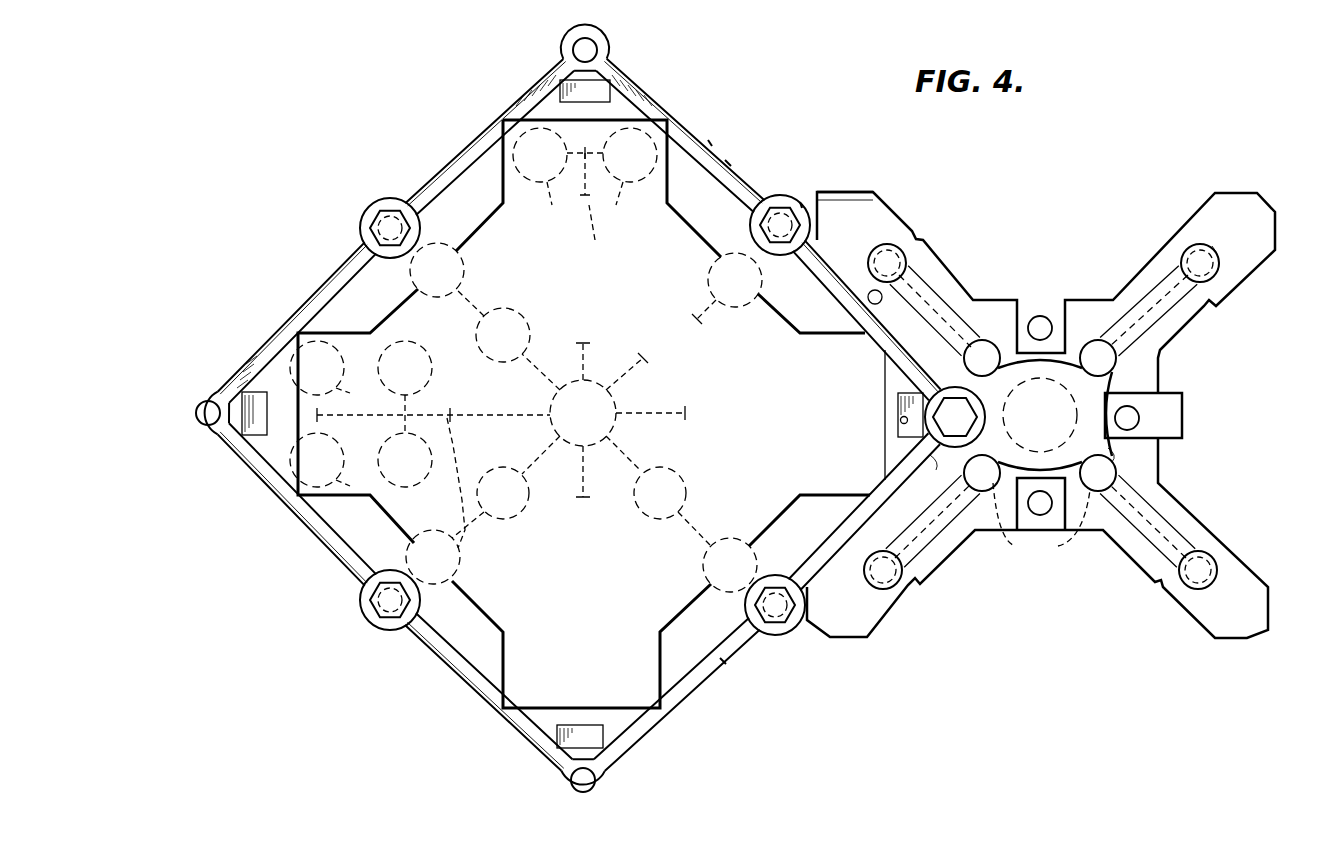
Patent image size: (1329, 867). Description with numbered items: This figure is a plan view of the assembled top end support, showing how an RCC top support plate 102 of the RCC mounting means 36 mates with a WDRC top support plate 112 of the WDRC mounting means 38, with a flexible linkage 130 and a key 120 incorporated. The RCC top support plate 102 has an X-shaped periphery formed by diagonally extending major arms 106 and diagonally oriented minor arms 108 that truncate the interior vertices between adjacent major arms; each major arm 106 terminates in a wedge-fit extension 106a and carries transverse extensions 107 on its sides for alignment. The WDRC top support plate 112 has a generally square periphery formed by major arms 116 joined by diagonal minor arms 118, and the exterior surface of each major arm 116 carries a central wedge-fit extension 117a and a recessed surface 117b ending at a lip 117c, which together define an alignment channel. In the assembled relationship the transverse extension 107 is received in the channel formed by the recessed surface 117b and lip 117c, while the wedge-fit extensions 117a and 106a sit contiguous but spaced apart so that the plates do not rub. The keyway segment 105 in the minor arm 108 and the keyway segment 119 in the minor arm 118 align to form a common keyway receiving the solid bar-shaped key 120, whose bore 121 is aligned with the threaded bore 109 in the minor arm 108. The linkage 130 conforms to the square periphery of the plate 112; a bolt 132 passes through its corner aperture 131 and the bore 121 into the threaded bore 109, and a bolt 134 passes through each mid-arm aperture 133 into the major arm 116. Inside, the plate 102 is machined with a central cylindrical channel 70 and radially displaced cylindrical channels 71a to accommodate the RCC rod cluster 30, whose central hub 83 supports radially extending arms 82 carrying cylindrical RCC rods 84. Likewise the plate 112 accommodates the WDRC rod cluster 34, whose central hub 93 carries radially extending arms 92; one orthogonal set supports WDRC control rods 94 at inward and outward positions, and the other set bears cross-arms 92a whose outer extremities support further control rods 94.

The RCC rod cluster 30 is at (1088, 401).
The WDRC rod cluster 34 is at (552, 358).
The RCC mounting means 36 is at (1266, 186).
The WDRC mounting means 38 is at (402, 160).
The central cylindrical channel 70 is at (1114, 455).
The cylindrical channel 71a is at (1218, 258).
The radially extending arms 82 is at (928, 290).
The central hub 83 is at (1052, 428).
The RCC rods 84 is at (906, 245).
The radially extending arms 92 is at (474, 460).
The cross-arms 92a is at (557, 148).
The central hub 93 is at (554, 404).
The WDRC control rods 94 is at (550, 200).
The RCC top support plate 102 is at (1252, 274).
The keyway segment 105 is at (944, 469).
The major arms 106 is at (845, 216).
The wedge-fit extension 106a is at (823, 192).
The transverse extensions 107 is at (868, 299).
The minor arms 108 is at (1100, 300).
The threaded bore 109 is at (1036, 318).
The WDRC top support plate 112 is at (641, 66).
The major arms 116 is at (710, 232).
The wedge-fit extension 117a is at (801, 200).
The recessed surface 117b is at (728, 160).
The lip 117c is at (709, 140).
The minor arms 118 is at (886, 468).
The keyway segment 119 is at (901, 421).
The key 120 is at (898, 400).
The bore 121 is at (1136, 423).
The linkage 130 is at (724, 662).
The corner apertures 131 is at (573, 51).
The bolt 132 is at (948, 386).
The apertures 133 is at (378, 205).
The bolt 134 is at (366, 228).